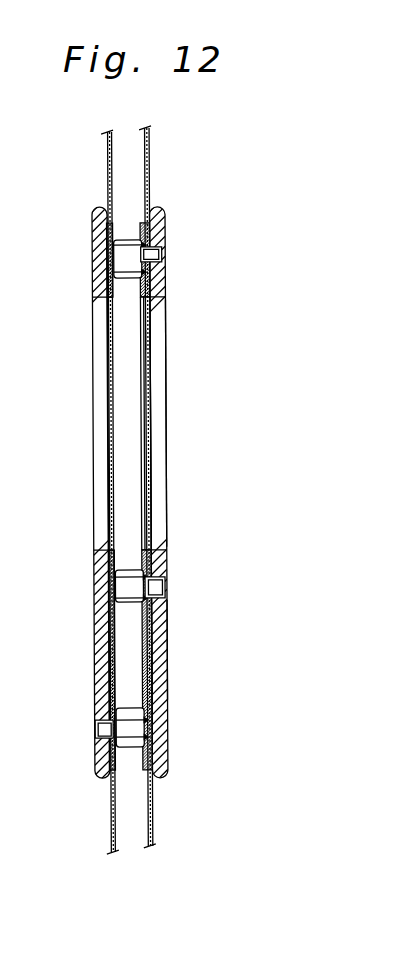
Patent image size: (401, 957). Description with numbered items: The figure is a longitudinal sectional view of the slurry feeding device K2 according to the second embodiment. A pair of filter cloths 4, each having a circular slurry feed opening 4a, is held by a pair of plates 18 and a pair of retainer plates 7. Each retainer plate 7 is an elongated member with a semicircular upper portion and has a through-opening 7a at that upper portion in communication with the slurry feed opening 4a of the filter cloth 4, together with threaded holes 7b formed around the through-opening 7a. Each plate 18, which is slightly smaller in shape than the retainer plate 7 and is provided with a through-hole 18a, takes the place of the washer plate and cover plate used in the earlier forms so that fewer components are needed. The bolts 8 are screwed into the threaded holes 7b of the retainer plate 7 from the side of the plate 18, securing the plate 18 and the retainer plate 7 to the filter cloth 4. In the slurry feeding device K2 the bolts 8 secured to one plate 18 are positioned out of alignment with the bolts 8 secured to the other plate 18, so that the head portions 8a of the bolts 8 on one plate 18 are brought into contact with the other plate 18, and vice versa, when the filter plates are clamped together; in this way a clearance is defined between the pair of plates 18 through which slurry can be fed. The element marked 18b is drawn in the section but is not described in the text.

The filter cloth 4 is at (104, 165).
The slurry feed opening 4a is at (152, 340).
The retainer plate 7 is at (92, 262).
The through-opening 7a is at (166, 393).
The threaded holes 7b is at (153, 600).
The bolts 8 is at (131, 278).
The head portions 8a is at (127, 588).
The plate 18 is at (120, 637).
The through-hole 18a is at (145, 455).
The bolt head 18b is at (150, 286).
The slurry feeding device K2 is at (178, 430).